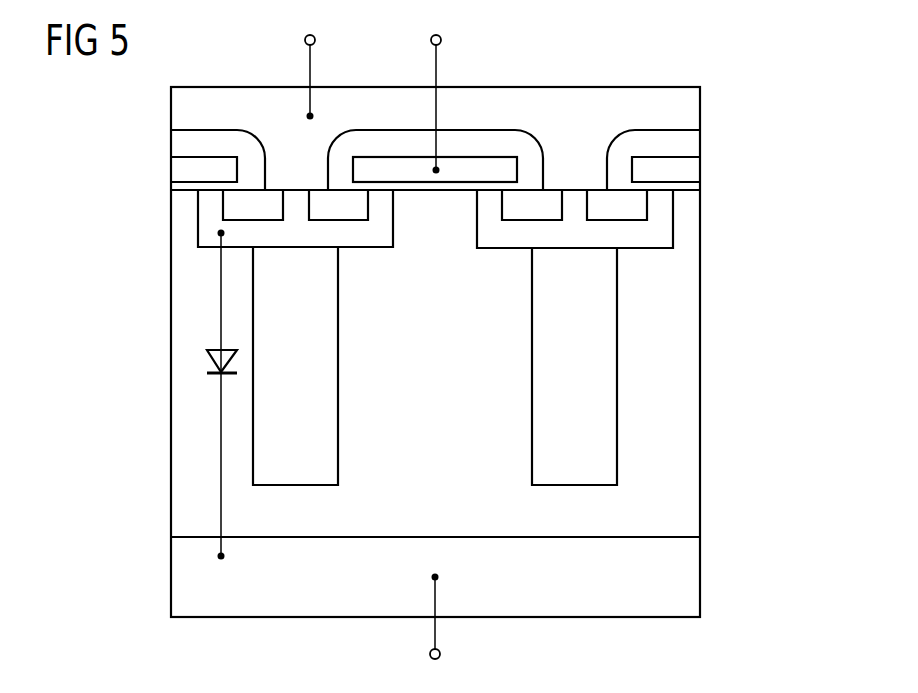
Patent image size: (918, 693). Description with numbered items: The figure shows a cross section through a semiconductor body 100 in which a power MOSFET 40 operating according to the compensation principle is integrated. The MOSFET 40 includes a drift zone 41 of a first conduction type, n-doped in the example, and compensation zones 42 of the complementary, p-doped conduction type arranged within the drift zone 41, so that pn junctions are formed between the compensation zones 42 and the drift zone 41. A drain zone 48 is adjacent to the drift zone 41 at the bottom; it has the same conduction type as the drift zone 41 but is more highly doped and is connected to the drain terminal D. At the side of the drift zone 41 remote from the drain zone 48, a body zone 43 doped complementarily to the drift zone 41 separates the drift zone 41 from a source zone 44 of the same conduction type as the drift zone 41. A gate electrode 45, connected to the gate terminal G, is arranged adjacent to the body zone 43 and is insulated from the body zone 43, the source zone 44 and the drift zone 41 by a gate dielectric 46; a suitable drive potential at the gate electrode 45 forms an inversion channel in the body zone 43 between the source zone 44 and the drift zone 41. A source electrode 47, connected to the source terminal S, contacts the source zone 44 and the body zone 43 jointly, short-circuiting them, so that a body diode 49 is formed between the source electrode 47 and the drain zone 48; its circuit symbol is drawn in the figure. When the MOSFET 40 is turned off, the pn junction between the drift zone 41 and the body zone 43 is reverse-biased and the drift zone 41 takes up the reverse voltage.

The MOSFET 40 is at (768, 234).
The drift zone 41 is at (683, 392).
The compensation zone 42 is at (603, 342).
The body zone 43 is at (508, 237).
The source zone 44 is at (517, 210).
The gate electrode 45 is at (497, 170).
The gate dielectric 46 is at (490, 188).
The source electrode 47 is at (685, 112).
The drain zone 48 is at (683, 580).
The diode 49 is at (207, 363).
The semiconductor body 100 is at (706, 491).